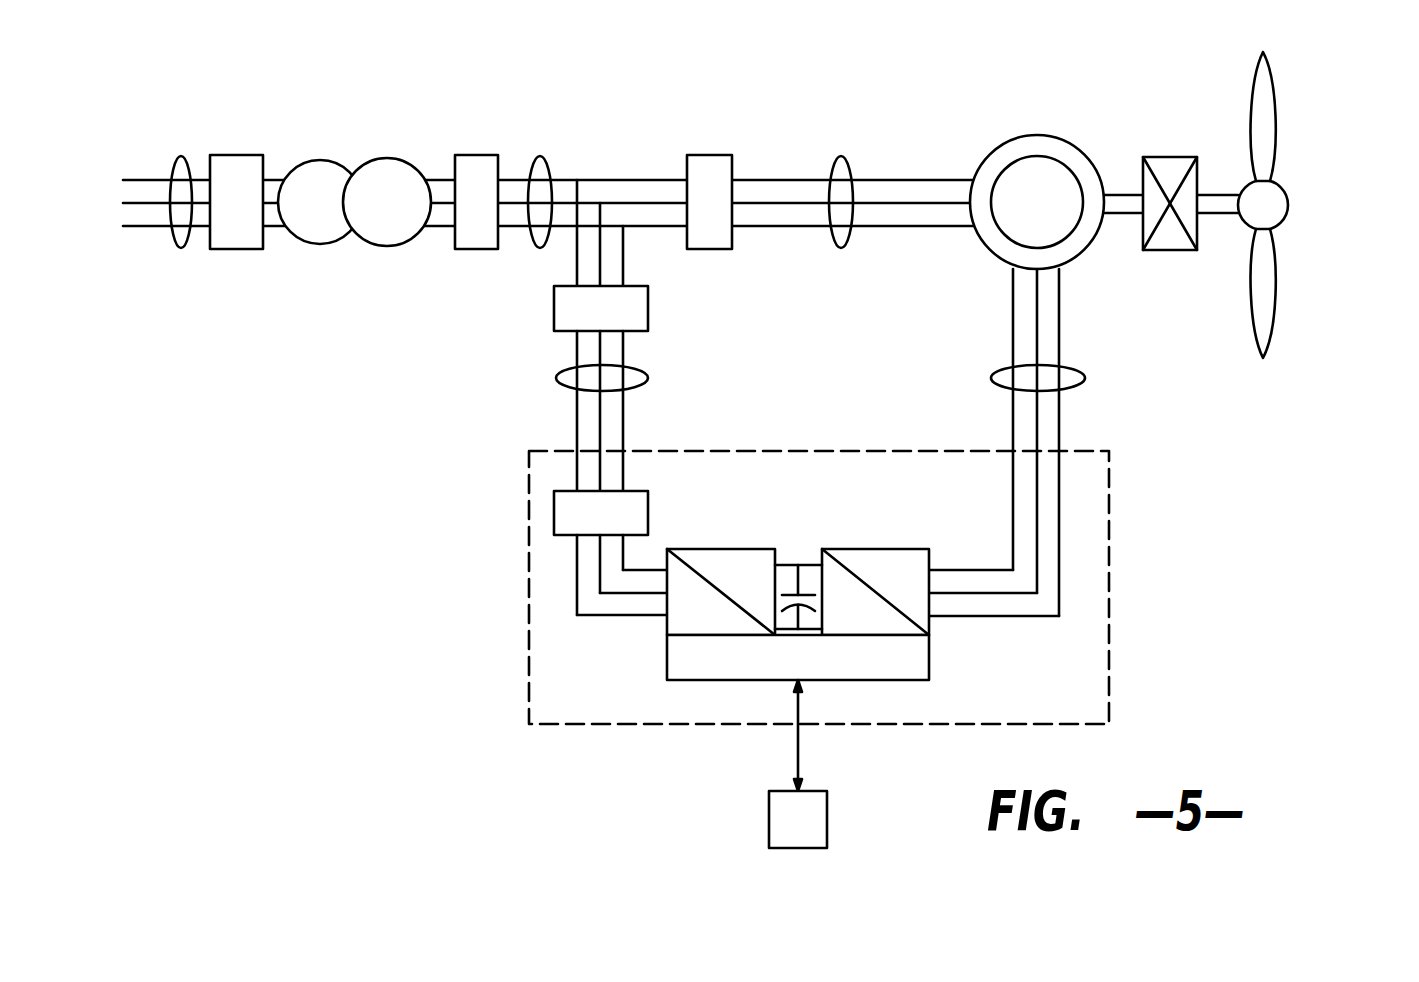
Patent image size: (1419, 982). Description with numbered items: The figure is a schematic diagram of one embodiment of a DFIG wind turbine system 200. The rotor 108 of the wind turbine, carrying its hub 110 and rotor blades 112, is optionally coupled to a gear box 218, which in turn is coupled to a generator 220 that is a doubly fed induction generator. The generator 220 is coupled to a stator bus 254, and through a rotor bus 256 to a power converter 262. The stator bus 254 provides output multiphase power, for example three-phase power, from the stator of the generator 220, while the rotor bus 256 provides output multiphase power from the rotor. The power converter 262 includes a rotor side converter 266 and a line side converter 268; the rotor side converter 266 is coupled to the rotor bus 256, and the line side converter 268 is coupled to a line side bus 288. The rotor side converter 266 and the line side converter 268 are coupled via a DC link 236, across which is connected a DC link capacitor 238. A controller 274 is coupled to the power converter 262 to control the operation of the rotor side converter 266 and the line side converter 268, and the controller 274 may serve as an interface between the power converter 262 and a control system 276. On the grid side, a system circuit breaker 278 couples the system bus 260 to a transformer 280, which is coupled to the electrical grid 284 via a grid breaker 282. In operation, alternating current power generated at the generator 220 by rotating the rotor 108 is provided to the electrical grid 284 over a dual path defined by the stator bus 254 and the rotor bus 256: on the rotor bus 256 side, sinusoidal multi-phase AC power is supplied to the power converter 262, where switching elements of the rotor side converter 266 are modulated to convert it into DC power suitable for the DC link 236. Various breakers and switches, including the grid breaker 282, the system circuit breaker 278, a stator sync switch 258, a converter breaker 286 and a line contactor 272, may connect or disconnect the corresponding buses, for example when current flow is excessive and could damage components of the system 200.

The rotor 108 is at (1312, 106).
The hub 110 is at (1290, 196).
The rotor blades 112 is at (1278, 131).
The DFIG wind turbine system 200 is at (394, 573).
The gear box 218 is at (1174, 157).
The generator 220 is at (1036, 135).
The DC link 236 is at (808, 565).
The DC link capacitor 238 is at (784, 586).
The stator bus 254 is at (843, 155).
The rotor bus 256 is at (1086, 378).
The stator sync switch 258 is at (712, 155).
The system bus 260 is at (543, 155).
The power converter 262 is at (1109, 553).
The rotor side converter 266 is at (931, 627).
The line side converter 268 is at (667, 626).
The line contactor 272 is at (554, 515).
The controller 274 is at (713, 685).
The control system 276 is at (828, 818).
The system circuit breaker 278 is at (480, 155).
The transformer 280 is at (387, 158).
The grid breaker 282 is at (238, 155).
The electrical grid 284 is at (182, 155).
The converter breaker 286 is at (554, 312).
The line side bus 288 is at (557, 379).